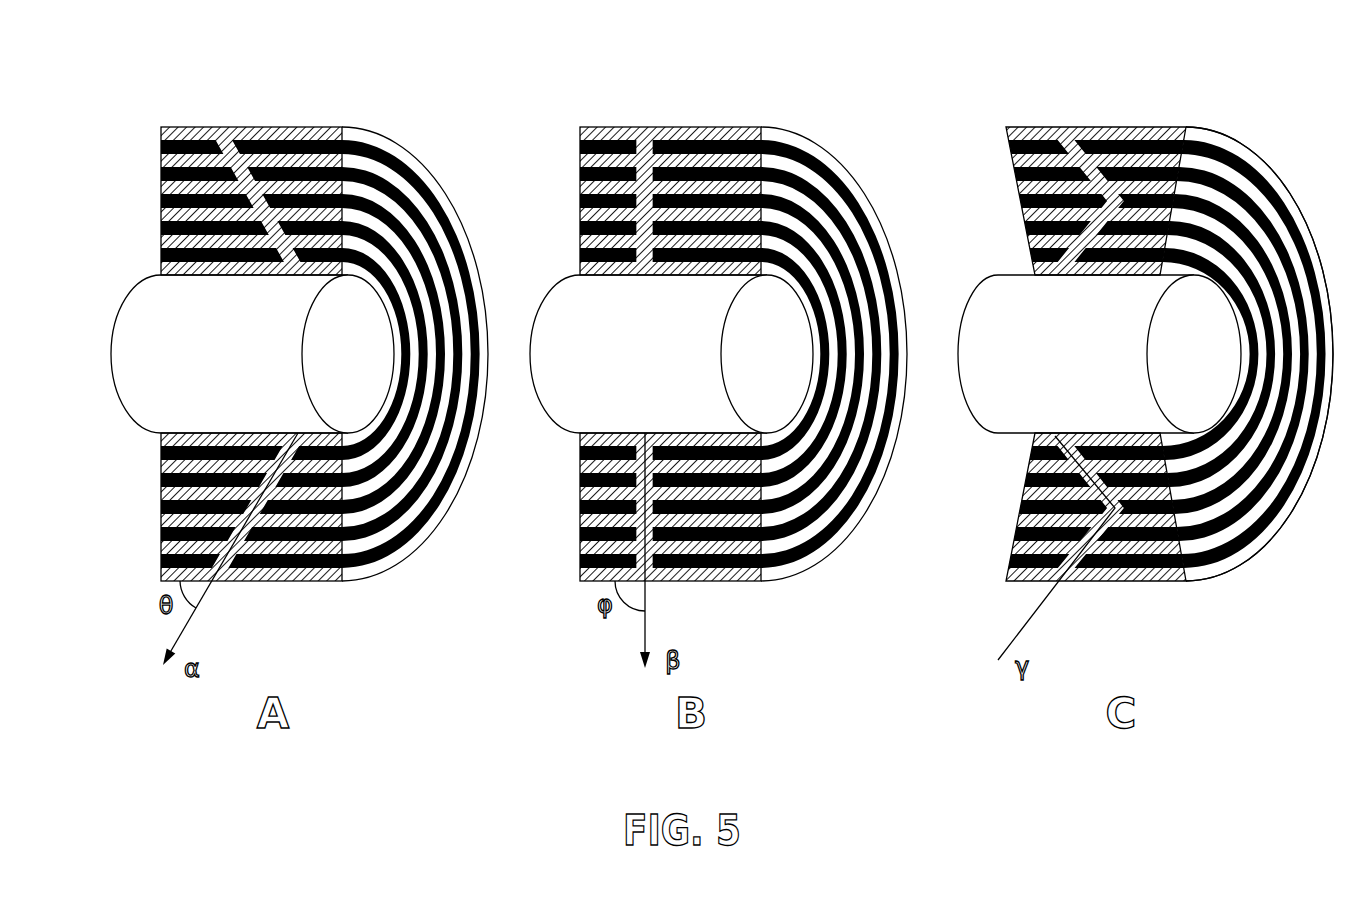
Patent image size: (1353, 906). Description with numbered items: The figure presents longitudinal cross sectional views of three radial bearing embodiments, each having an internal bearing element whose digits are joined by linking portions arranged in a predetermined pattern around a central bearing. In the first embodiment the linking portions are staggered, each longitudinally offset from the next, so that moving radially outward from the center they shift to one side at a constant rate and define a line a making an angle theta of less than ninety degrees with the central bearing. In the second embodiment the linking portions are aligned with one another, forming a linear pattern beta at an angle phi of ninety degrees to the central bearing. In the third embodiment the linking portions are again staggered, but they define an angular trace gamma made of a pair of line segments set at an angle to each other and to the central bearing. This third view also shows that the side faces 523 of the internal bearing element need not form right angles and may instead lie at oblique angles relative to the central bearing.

The side faces 523 is at (1207, 103).